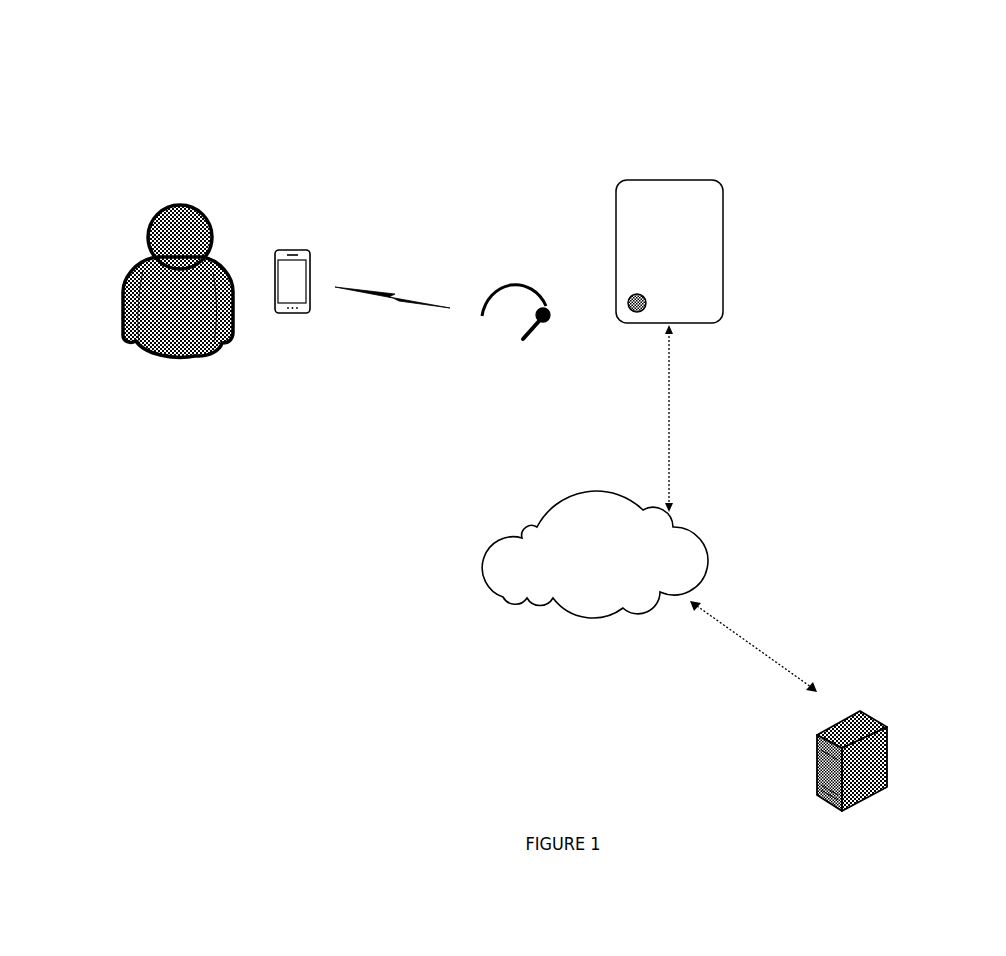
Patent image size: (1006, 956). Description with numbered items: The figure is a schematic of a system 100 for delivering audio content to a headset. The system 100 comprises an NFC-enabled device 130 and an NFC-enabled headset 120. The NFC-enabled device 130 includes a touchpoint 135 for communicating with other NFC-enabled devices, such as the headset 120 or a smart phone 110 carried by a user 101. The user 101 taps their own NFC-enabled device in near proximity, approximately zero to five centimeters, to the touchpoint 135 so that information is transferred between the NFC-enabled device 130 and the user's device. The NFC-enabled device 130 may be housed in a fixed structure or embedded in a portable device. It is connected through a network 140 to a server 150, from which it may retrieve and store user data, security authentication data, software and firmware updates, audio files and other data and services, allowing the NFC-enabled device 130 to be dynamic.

The system 100 is at (548, 53).
The user 101 is at (125, 282).
The smart phone 110 is at (258, 324).
The NFC-enabled headset 120 is at (497, 262).
The NFC-enabled device 130 is at (680, 232).
The touchpoint 135 is at (630, 293).
The network 140 is at (503, 598).
The server 150 is at (888, 755).